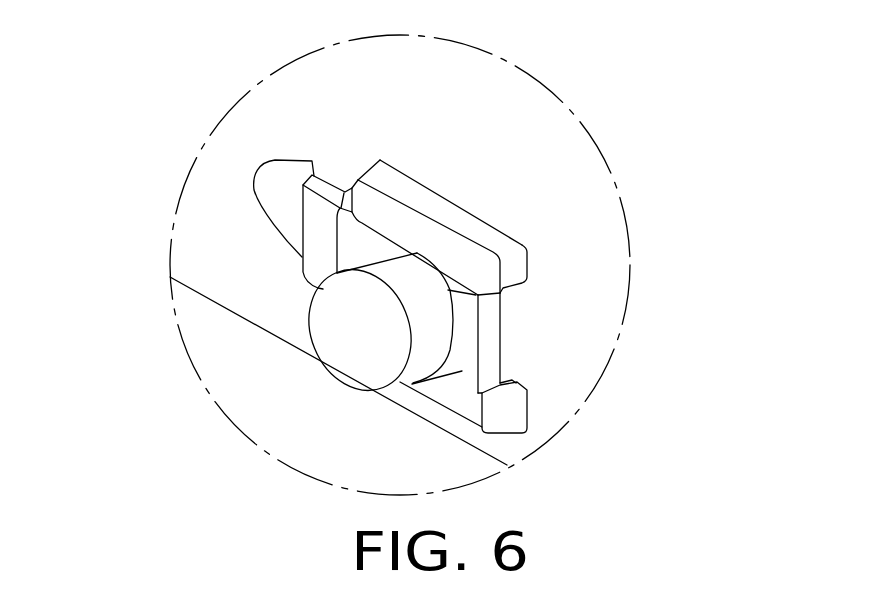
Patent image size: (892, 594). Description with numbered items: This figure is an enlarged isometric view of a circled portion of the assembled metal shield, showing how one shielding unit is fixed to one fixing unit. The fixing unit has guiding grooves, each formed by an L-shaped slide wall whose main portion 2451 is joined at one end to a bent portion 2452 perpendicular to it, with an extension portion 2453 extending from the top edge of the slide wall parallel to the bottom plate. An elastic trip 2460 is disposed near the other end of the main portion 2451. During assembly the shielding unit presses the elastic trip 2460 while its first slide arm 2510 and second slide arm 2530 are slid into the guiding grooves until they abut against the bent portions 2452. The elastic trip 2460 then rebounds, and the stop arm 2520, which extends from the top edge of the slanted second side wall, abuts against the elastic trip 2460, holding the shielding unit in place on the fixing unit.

The main portion 2451 is at (447, 212).
The bent portion 2452 is at (515, 272).
The extension portion 2453 is at (390, 210).
The elastic trip 2460 is at (275, 195).
The first slide arm 2510 is at (345, 188).
The stop arm 2520 is at (327, 233).
The second slide arm 2530 is at (515, 377).